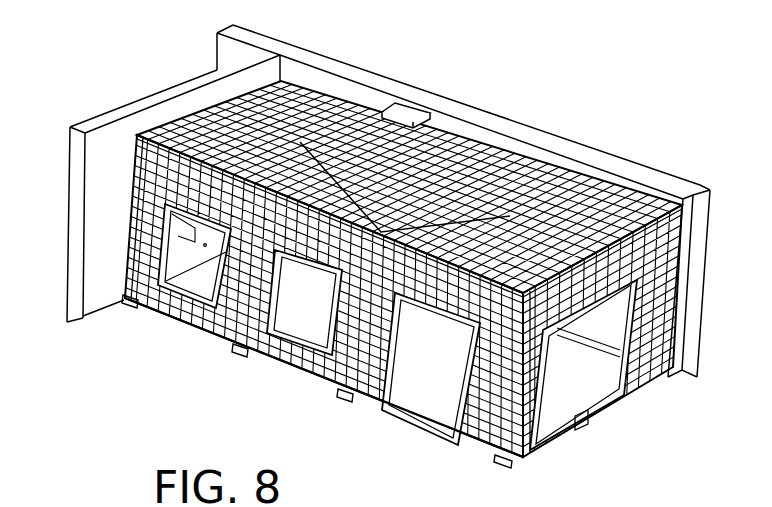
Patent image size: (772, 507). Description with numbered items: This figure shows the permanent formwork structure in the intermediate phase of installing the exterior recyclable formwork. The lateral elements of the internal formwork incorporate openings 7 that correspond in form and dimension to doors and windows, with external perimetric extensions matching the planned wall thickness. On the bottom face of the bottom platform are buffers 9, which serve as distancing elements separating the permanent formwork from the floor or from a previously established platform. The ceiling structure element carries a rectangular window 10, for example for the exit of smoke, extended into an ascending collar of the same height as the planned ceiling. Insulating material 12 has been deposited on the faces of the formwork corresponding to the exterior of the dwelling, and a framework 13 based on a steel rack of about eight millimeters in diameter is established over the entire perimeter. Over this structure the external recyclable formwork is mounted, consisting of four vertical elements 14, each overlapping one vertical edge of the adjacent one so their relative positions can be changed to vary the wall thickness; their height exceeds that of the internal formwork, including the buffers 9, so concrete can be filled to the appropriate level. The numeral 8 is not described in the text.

The openings 7 is at (415, 382).
The base frame 8 is at (265, 342).
The buffers 9 is at (132, 298).
The rectangular window 10 is at (405, 110).
The insulating material 12 is at (140, 170).
The framework 13 is at (158, 137).
The vertical elements 14 is at (155, 95).